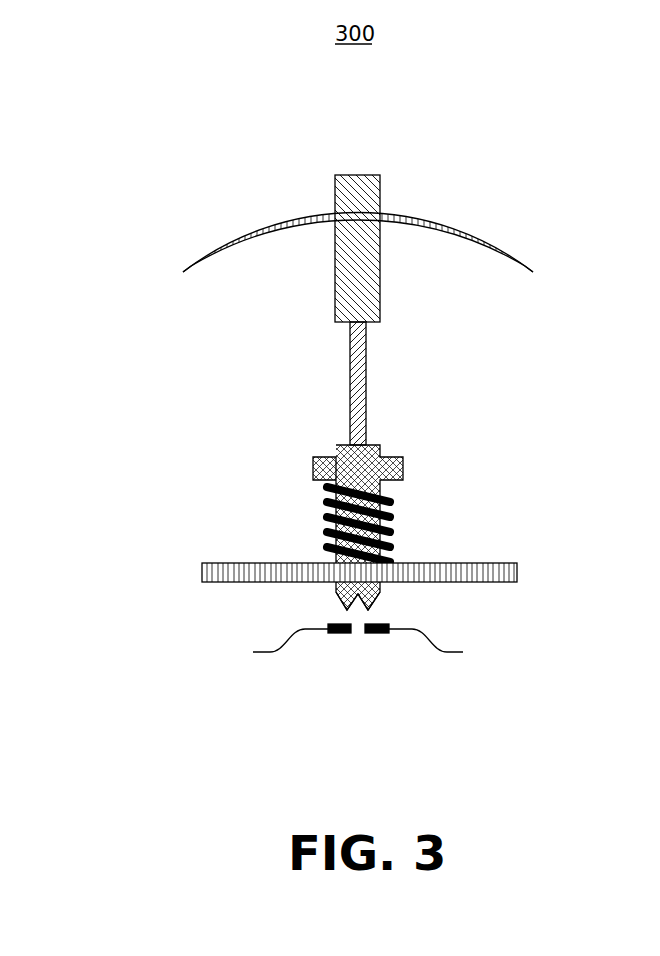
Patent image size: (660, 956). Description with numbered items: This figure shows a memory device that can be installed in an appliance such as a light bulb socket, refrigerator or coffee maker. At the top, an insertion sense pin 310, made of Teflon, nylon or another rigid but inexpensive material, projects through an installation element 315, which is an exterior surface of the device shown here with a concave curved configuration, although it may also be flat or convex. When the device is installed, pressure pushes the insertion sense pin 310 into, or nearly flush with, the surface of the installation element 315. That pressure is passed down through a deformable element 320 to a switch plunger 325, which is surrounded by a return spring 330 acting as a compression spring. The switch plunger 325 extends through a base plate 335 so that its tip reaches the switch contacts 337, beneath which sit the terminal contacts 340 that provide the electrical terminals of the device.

The insertion sense pin 310 is at (330, 185).
The installation element 315 is at (432, 222).
The deformable element 320 is at (367, 383).
The switch plunger 325 is at (305, 470).
The return spring 330 is at (397, 515).
The base plate 335 is at (207, 585).
The switch contacts 337 is at (397, 603).
The terminal contacts 340 is at (362, 640).